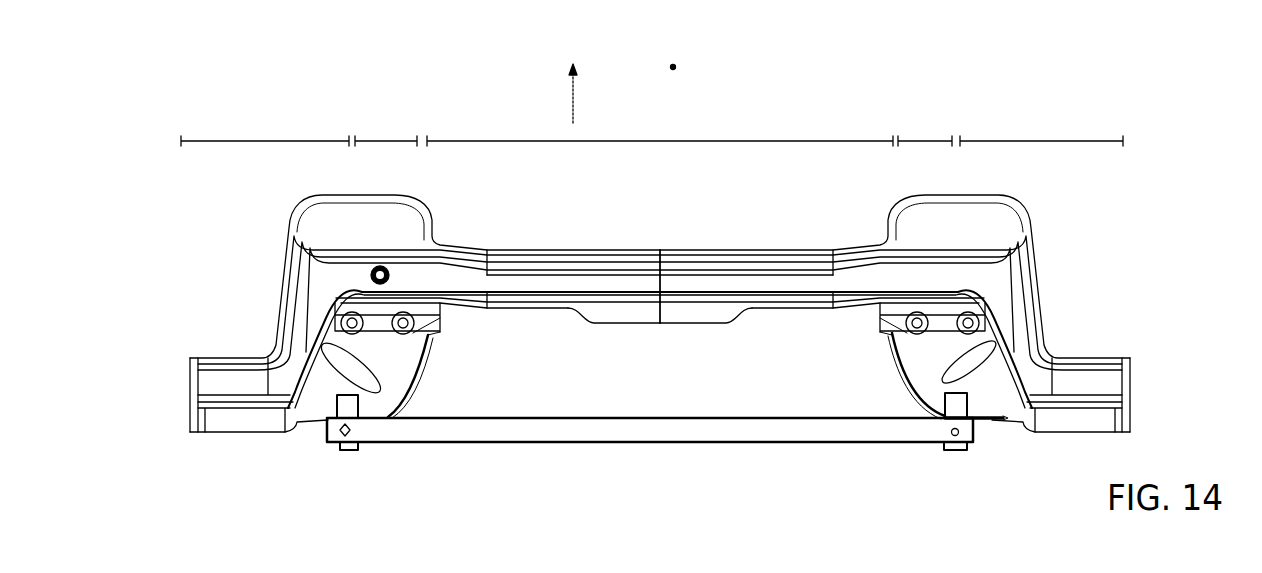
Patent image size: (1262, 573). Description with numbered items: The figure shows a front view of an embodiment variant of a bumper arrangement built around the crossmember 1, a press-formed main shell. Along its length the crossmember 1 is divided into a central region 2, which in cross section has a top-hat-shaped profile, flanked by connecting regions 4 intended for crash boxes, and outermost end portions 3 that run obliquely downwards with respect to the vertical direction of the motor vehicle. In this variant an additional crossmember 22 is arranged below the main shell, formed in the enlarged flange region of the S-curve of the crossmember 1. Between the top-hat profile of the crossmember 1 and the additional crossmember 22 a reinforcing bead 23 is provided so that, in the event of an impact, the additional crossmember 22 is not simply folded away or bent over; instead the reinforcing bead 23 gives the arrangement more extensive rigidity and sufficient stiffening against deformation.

The crossmember 1 is at (655, 288).
The central region 2 is at (677, 140).
The end portions 3 is at (267, 133).
The connecting regions 4 is at (392, 140).
The additional crossmember 22 is at (593, 443).
The reinforcing bead 23 is at (377, 379).